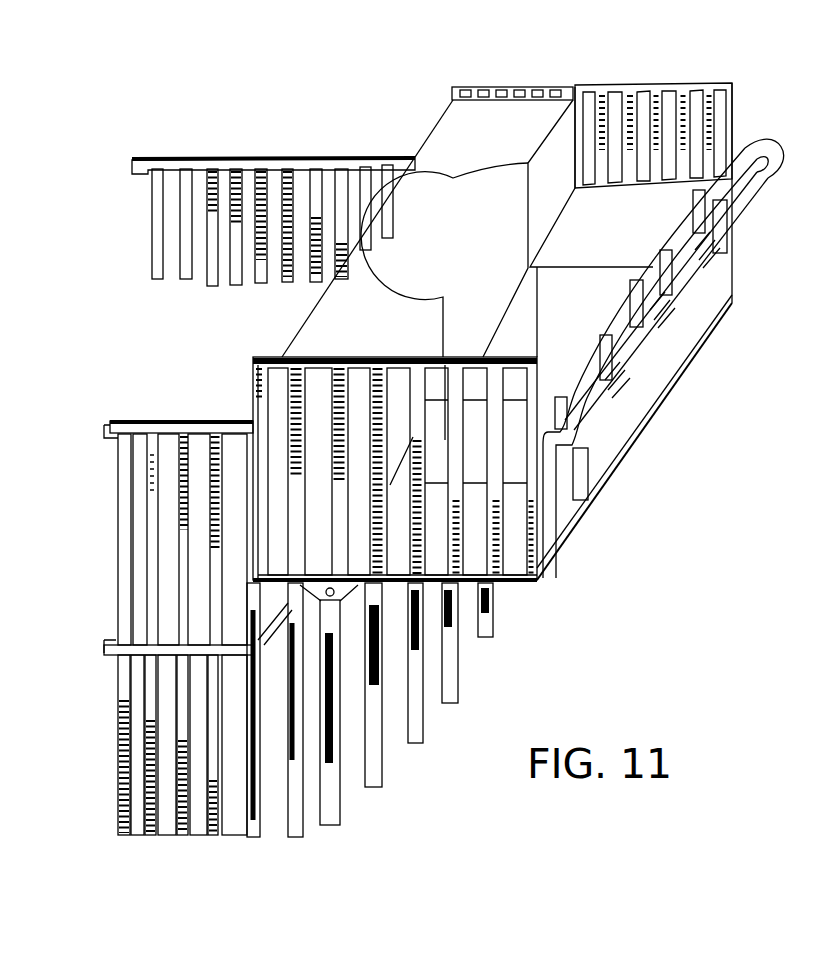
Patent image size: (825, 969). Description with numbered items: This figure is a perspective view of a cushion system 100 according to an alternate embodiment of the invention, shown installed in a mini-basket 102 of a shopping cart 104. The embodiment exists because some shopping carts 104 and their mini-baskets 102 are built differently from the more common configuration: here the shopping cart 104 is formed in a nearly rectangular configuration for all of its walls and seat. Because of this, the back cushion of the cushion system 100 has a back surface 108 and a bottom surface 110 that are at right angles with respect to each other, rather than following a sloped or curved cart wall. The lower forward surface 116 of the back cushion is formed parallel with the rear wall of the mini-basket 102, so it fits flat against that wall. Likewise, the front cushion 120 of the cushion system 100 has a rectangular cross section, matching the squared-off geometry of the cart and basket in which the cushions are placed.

The cushion system 100 is at (376, 116).
The mini-basket 102 is at (735, 115).
The shopping cart 104 is at (160, 800).
The back surface 108 is at (332, 312).
The bottom surface 110 is at (530, 582).
The lower forward surface 116 is at (712, 272).
The front cushion 120 is at (678, 367).